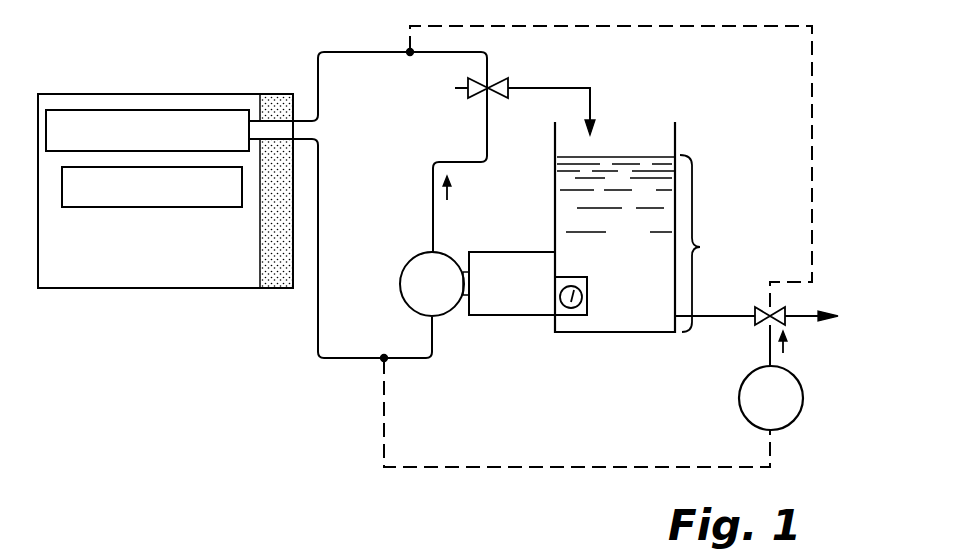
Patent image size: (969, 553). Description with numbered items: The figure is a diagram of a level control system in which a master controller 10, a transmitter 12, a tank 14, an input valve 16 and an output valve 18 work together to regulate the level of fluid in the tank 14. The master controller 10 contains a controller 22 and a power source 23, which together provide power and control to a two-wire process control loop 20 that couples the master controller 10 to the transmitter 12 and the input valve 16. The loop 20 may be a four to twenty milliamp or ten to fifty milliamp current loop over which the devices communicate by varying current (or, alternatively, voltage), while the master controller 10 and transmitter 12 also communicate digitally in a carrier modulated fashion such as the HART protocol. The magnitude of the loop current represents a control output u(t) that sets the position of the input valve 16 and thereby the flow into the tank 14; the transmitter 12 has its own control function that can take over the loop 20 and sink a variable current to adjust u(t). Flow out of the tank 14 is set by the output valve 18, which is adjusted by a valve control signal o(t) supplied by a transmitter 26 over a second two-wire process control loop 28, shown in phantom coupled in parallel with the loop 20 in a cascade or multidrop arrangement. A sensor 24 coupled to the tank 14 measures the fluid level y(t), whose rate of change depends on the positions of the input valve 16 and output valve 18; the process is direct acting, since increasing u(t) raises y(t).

The master controller 10 is at (147, 288).
The transmitter 12 is at (508, 316).
The tank 14 is at (620, 332).
The input valve 16 is at (506, 81).
The output valve 18 is at (755, 322).
The two-wire process control loop 20 is at (318, 338).
The controller 22 is at (199, 207).
The power source 23 is at (125, 110).
The sensor 24 is at (578, 277).
The transmitter 26 is at (738, 400).
The two-wire process control loop 28 is at (543, 470).